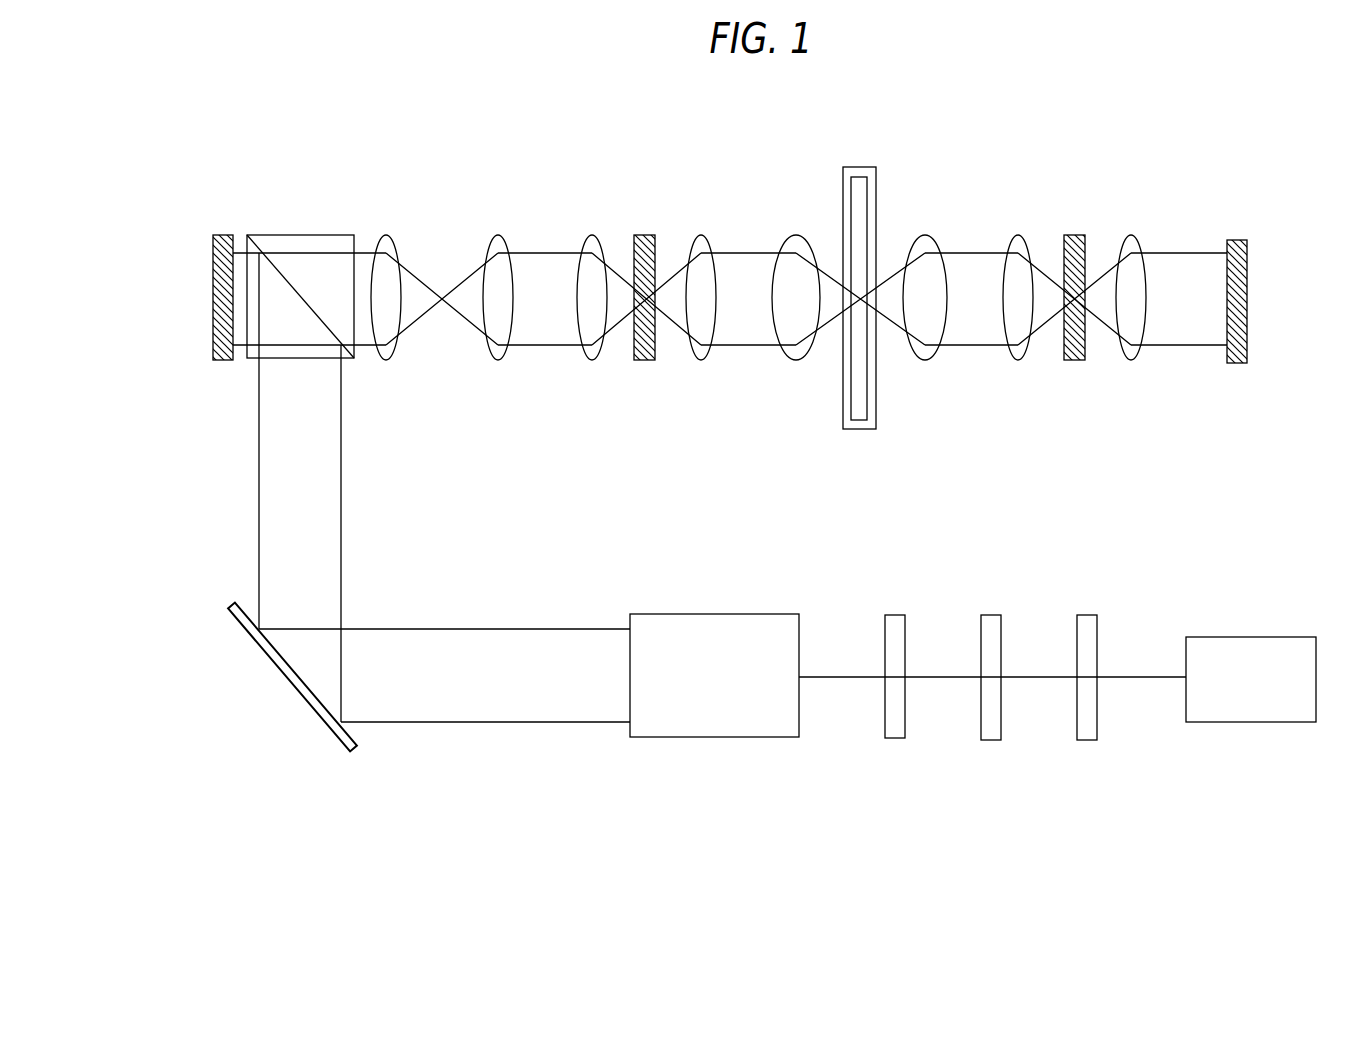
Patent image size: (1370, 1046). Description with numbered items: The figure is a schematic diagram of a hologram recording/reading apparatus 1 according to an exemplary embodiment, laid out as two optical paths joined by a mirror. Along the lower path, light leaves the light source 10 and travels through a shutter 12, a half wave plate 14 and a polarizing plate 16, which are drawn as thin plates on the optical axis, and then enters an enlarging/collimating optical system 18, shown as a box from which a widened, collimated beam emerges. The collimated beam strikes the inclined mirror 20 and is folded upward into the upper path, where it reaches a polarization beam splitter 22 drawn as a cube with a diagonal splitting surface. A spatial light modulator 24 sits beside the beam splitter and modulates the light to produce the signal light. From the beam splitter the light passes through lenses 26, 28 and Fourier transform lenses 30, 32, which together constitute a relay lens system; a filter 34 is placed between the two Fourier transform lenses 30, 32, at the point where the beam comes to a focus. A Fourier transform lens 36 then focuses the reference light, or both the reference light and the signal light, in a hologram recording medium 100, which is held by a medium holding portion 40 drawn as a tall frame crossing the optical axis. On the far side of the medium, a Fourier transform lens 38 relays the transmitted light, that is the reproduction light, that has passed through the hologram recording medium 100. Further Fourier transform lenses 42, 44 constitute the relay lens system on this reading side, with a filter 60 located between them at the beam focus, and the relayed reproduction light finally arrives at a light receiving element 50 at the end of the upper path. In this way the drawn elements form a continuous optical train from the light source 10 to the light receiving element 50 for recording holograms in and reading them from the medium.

The hologram recording/reading apparatus 1 is at (500, 760).
The light source 10 is at (1252, 637).
The shutter 12 is at (1088, 615).
The half wave plate 14 is at (991, 615).
The polarizing plate 16 is at (896, 615).
The enlarging/collimating optical system 18 is at (712, 614).
The mirror 20 is at (283, 677).
The polarization beam splitter 22 is at (301, 235).
The spatial light modulator 24 is at (225, 235).
The lens 26 is at (387, 235).
The lens 28 is at (499, 235).
The Fourier transform lens 30 is at (592, 235).
The Fourier transform lens 32 is at (701, 235).
The filter 34 is at (646, 235).
The Fourier transform lens 36 is at (796, 235).
The Fourier transform lens 38 is at (925, 235).
The medium holding portion 40 is at (858, 432).
The Fourier transform lens 42 is at (1018, 235).
The Fourier transform lens 44 is at (1131, 235).
The light receiving element 50 is at (1238, 240).
The filter 60 is at (1075, 235).
The hologram recording medium 100 is at (861, 167).